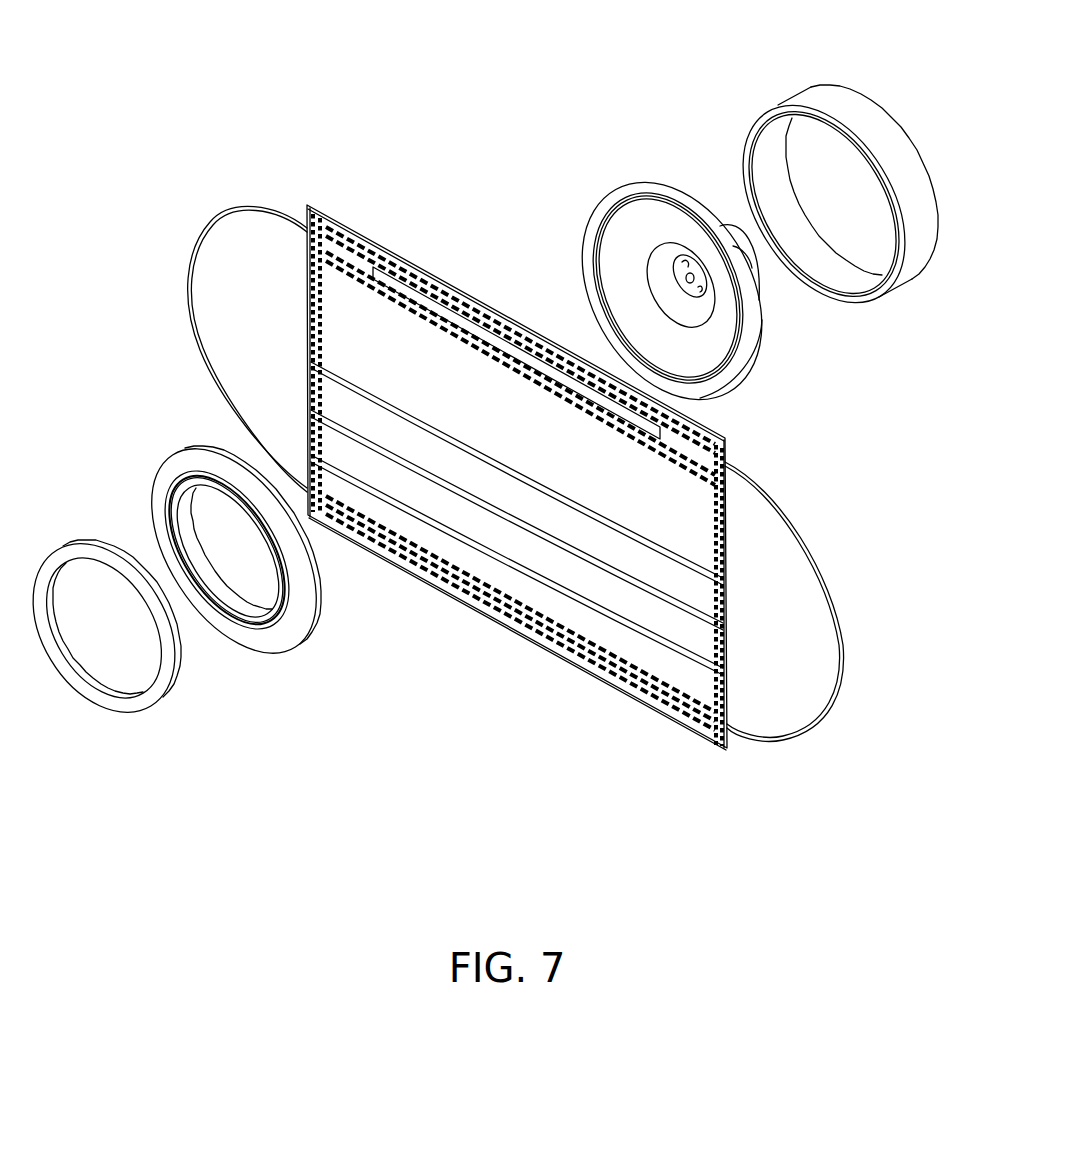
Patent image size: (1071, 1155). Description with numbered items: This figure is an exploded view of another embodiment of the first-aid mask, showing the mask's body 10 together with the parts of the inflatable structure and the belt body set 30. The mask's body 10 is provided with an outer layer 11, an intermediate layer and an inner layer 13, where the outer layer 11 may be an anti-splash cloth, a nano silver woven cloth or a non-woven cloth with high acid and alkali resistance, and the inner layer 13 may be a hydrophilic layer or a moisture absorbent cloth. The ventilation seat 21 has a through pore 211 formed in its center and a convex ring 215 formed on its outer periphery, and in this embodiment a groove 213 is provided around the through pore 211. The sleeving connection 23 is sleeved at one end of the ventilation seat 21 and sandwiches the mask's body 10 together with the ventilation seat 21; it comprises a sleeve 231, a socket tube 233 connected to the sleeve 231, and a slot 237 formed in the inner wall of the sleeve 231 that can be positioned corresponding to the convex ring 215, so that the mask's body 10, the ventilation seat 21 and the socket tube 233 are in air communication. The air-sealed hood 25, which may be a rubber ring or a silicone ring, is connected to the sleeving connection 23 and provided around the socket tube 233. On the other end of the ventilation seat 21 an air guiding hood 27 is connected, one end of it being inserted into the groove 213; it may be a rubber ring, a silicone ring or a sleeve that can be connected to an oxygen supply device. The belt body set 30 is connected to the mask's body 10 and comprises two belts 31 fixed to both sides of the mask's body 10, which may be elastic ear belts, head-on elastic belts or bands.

The mask's body 10 is at (547, 682).
The outer layer 11 is at (392, 252).
The inner layer 13 is at (706, 540).
The ventilation seat 21 is at (216, 648).
The through pore 211 is at (250, 590).
The groove 213 is at (188, 484).
The convex ring 215 is at (306, 556).
The sleeving connection 23 is at (586, 203).
The sleeve 231 is at (750, 356).
The socket tube 233 is at (750, 255).
The slot 237 is at (616, 318).
The air-sealed hood 25 is at (840, 108).
The air guiding hood 27 is at (97, 547).
The belt body set 30 is at (846, 696).
The belt 31 is at (844, 638).